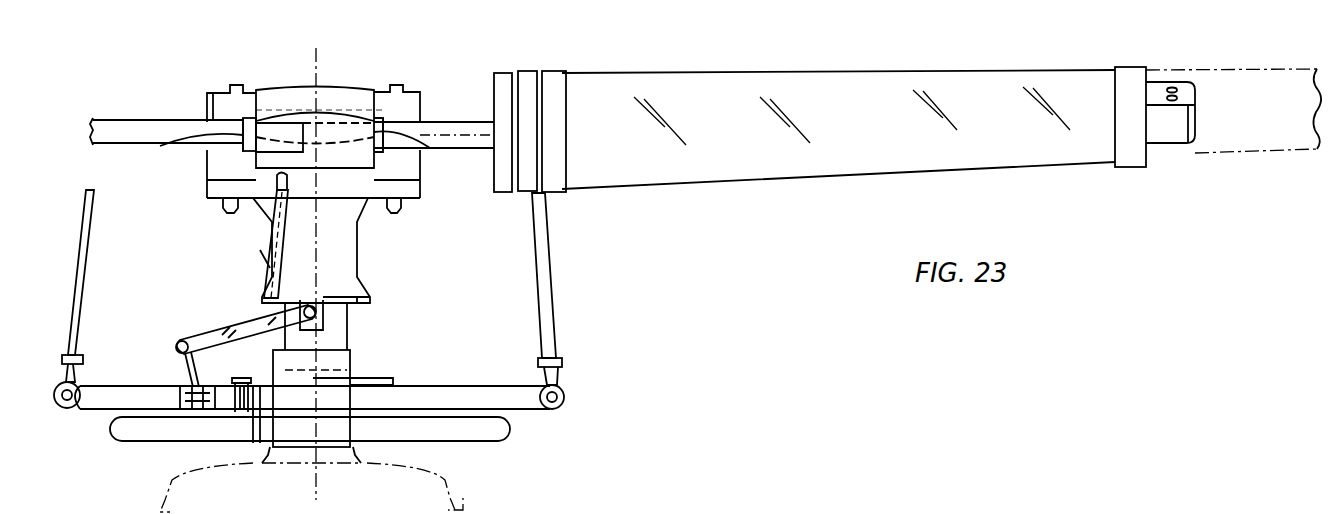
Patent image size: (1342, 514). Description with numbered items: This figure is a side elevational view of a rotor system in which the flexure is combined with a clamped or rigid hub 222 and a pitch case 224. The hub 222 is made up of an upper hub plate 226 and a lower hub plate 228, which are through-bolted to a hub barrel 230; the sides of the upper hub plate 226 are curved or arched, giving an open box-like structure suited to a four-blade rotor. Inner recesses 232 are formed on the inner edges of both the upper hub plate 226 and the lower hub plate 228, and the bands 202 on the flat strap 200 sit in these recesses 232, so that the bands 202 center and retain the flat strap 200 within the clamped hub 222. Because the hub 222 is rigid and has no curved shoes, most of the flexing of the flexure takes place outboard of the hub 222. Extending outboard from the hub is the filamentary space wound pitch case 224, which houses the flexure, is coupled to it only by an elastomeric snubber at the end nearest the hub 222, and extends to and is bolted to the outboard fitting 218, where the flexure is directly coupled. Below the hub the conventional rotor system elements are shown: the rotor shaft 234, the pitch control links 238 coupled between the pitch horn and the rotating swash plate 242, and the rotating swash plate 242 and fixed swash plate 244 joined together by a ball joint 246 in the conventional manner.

The flat strap 200 is at (450, 149).
The bands 202 is at (400, 135).
The outboard fitting 218 is at (1194, 137).
The hub 222 is at (421, 63).
The pitch case 224 is at (700, 50).
The upper hub plate 226 is at (213, 110).
The lower hub plate 228 is at (284, 87).
The hub barrel 230 is at (256, 190).
The inner recesses 232 is at (384, 118).
The rotor shaft 234 is at (334, 328).
The pitch control links 238 is at (90, 268).
The rotating swash plate 242 is at (407, 397).
The fixed swash plate 244 is at (474, 433).
The ball joint 246 is at (354, 378).